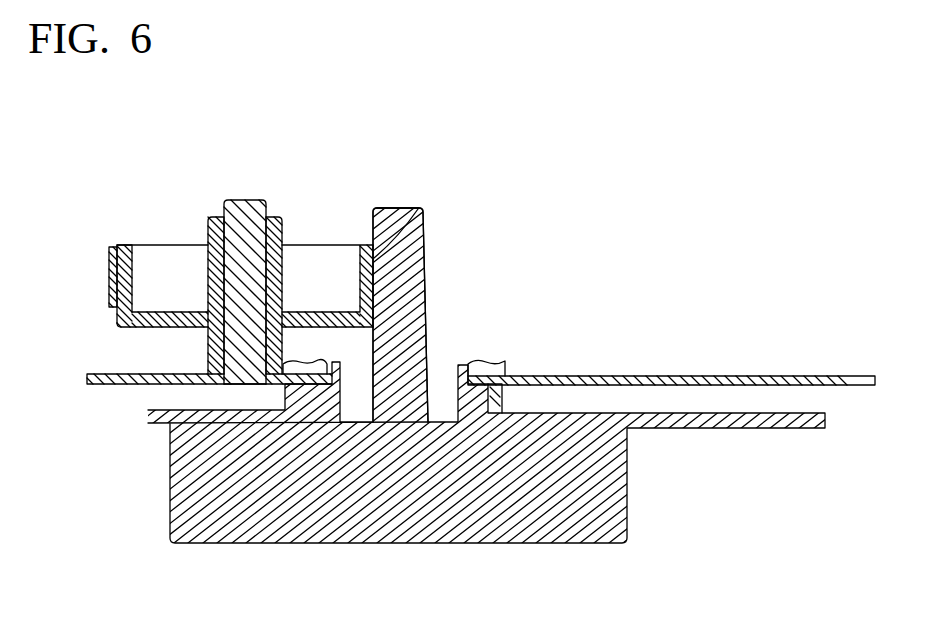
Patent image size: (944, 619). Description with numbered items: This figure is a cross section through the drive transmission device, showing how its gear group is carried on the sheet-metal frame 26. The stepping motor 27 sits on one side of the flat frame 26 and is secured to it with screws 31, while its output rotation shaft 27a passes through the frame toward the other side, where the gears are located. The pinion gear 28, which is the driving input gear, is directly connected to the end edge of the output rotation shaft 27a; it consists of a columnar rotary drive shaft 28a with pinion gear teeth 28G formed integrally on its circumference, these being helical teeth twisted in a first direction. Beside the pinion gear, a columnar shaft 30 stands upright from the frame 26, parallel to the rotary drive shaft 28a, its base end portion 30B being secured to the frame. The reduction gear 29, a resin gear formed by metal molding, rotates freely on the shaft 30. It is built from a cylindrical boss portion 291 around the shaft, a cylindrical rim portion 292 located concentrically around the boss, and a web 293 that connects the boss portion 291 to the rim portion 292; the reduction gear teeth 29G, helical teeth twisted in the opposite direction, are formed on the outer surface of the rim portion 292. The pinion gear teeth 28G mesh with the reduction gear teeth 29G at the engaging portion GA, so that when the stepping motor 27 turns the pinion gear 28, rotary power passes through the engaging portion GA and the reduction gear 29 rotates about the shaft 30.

The frame 26 is at (745, 375).
The stepping motor 27 is at (410, 518).
The output rotation shaft 27a is at (428, 390).
The pinion gear 28 is at (427, 277).
The pinion gear teeth 28G is at (418, 209).
The rotary drive shaft 28a is at (388, 208).
The engaging portion GA is at (383, 273).
The reduction gear 29 is at (210, 258).
The reduction gear teeth 29G is at (108, 263).
The boss portion 291 is at (283, 230).
The rim portion 292 is at (134, 262).
The web 293 is at (163, 312).
The shaft 30 is at (236, 200).
The base end portion 30B is at (268, 384).
The screws 31 is at (308, 360).